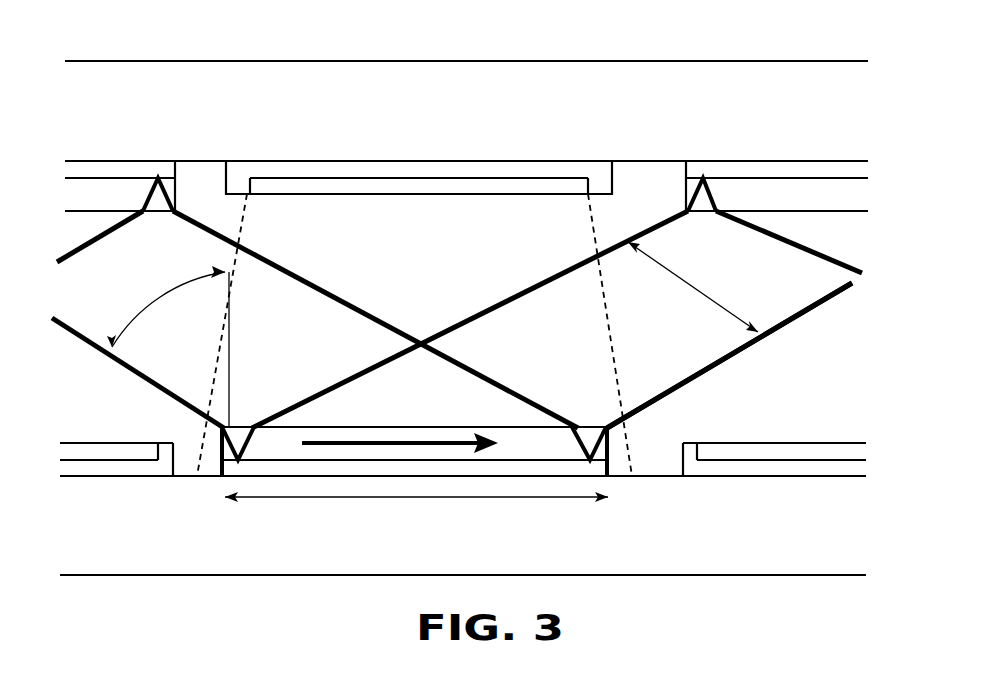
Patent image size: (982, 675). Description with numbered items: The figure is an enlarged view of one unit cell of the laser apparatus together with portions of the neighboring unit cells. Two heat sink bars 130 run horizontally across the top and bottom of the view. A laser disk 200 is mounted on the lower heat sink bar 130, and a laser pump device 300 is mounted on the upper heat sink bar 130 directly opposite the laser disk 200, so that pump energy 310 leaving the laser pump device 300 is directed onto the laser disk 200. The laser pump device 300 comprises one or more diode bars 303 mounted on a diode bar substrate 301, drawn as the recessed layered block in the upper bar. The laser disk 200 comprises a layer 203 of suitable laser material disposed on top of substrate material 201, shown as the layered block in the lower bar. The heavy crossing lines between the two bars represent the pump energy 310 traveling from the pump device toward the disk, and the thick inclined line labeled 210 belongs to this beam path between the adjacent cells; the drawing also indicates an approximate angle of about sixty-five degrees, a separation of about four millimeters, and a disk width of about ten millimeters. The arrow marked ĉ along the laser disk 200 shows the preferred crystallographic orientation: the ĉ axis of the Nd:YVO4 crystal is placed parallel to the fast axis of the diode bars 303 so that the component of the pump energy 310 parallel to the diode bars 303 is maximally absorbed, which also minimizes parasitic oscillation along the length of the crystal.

The heat sink bar 130 is at (207, 80).
The laser pump device 300 is at (424, 200).
The diode bar substrate 301 is at (477, 172).
The diode bar 303 is at (557, 187).
The pump energy 310 is at (342, 253).
The reflecting facet 210 is at (681, 350).
The laser disk 200 is at (462, 424).
The layer of laser material 203 is at (283, 450).
The substrate material 201 is at (513, 468).